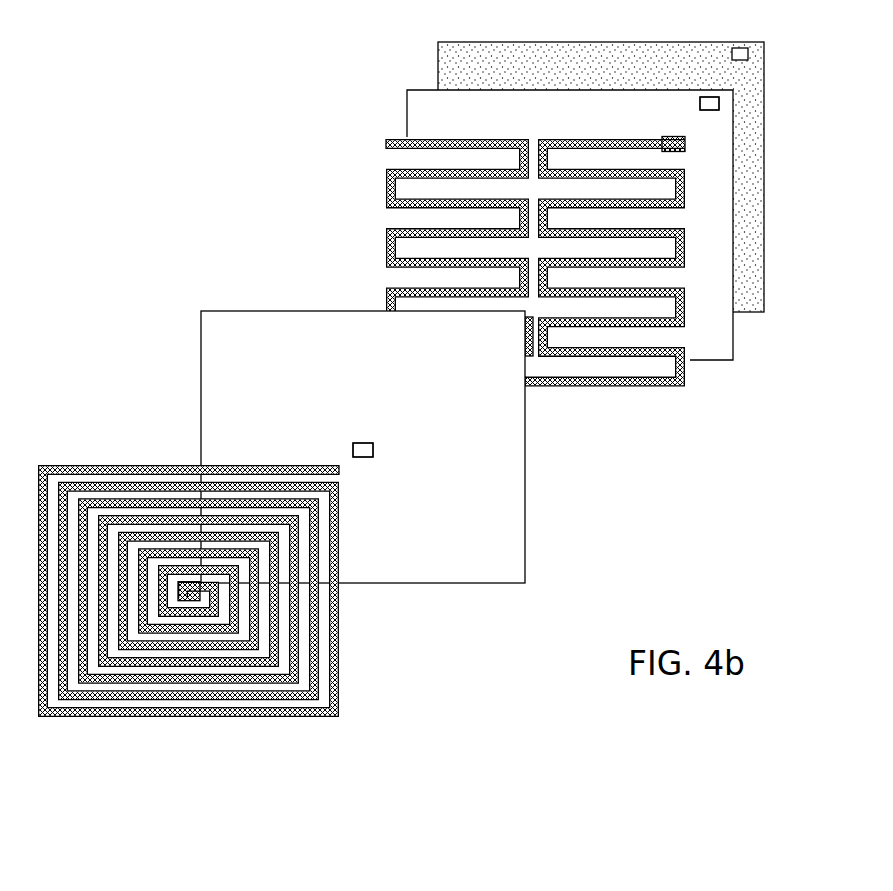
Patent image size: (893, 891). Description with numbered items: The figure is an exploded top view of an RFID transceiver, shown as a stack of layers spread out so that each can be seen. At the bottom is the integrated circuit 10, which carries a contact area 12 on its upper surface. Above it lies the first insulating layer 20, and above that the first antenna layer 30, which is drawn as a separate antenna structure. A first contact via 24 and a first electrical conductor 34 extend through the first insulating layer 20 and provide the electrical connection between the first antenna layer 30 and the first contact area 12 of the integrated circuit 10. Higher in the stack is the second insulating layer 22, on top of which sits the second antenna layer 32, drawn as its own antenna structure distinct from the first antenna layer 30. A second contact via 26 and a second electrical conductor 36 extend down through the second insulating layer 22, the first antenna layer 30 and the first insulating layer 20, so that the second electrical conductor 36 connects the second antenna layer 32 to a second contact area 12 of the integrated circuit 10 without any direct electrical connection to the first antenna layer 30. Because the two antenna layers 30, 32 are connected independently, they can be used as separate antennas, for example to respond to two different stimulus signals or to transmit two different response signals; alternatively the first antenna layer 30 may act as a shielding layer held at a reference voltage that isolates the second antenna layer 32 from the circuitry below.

The integrated circuit 10 is at (453, 63).
The contact area 12 is at (748, 52).
The first insulating layer 20 is at (419, 111).
The second insulating layer 22 is at (210, 353).
The first contact via 24 is at (719, 100).
The second contact via 26 is at (373, 449).
The first antenna layer 30 is at (385, 202).
The second antenna layer 32 is at (60, 466).
The first electrical conductor 34 is at (708, 110).
The second electrical conductor 36 is at (364, 452).